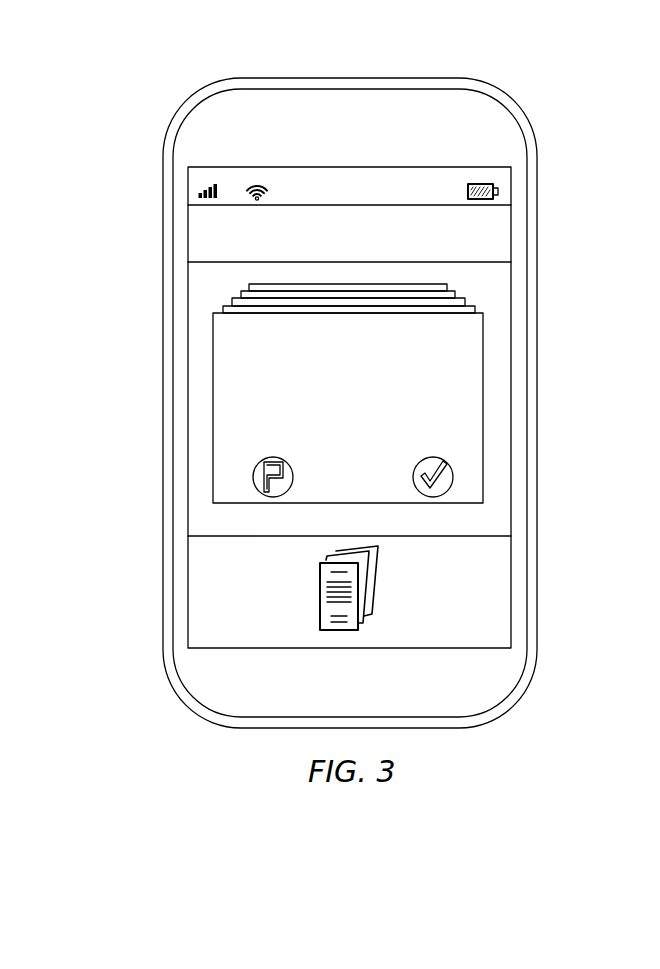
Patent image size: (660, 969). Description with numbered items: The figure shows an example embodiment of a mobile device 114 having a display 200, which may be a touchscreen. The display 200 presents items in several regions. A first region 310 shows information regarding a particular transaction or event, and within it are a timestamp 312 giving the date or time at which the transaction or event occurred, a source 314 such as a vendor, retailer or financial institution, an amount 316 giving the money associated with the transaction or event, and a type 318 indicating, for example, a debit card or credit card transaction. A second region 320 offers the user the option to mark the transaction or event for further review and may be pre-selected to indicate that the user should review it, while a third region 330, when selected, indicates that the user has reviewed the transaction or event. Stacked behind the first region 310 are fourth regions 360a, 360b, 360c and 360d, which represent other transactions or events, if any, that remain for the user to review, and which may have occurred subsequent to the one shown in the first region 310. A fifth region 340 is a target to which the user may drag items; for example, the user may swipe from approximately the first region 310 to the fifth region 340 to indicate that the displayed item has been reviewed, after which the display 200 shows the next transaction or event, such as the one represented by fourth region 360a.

The mobile device 114 is at (367, 53).
The display 200 is at (200, 630).
The first region 310 is at (277, 373).
The timestamp 312 is at (222, 336).
The source 314 is at (383, 387).
The amount 316 is at (243, 436).
The type 318 is at (458, 438).
The second region 320 is at (252, 477).
The third region 330 is at (455, 477).
The fifth region 340 is at (384, 592).
The fourth region 360a is at (478, 312).
The fourth region 360b is at (470, 305).
The fourth region 360c is at (462, 296).
The fourth region 360d is at (453, 288).